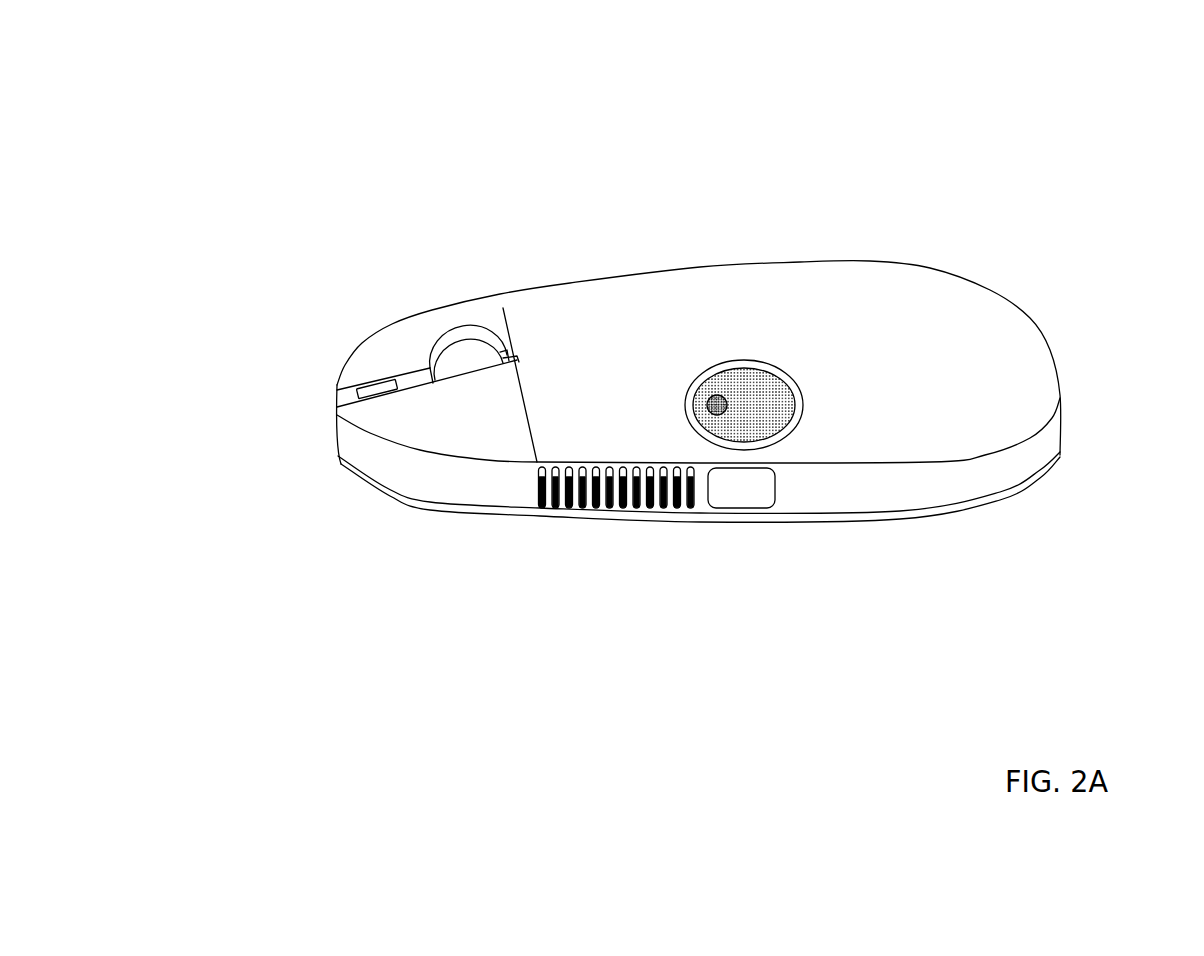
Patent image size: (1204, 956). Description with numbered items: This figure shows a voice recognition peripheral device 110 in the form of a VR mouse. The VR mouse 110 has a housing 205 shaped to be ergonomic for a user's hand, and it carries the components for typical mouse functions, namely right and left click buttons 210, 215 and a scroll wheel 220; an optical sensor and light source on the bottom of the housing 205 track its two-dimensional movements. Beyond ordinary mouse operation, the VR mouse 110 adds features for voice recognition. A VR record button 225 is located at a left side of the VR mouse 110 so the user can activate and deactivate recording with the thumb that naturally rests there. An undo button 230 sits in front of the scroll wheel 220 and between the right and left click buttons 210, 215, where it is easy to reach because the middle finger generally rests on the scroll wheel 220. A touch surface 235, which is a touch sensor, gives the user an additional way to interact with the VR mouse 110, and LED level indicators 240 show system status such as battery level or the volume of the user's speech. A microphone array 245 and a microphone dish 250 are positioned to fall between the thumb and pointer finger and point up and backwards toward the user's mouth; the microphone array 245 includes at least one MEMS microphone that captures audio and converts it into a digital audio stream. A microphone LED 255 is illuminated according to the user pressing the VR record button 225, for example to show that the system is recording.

The voice recognition peripheral device 110 is at (1024, 187).
The housing 205 is at (1018, 322).
The right click button 210 is at (358, 367).
The left click button 215 is at (333, 455).
The scroll wheel 220 is at (453, 350).
The VR record button 225 is at (740, 510).
The undo button 230 is at (350, 397).
The touch surface 235 is at (575, 507).
The LED level indicators 240 is at (625, 470).
The microphone array 245 is at (718, 398).
The microphone dish 250 is at (773, 413).
The microphone LED 255 is at (700, 382).